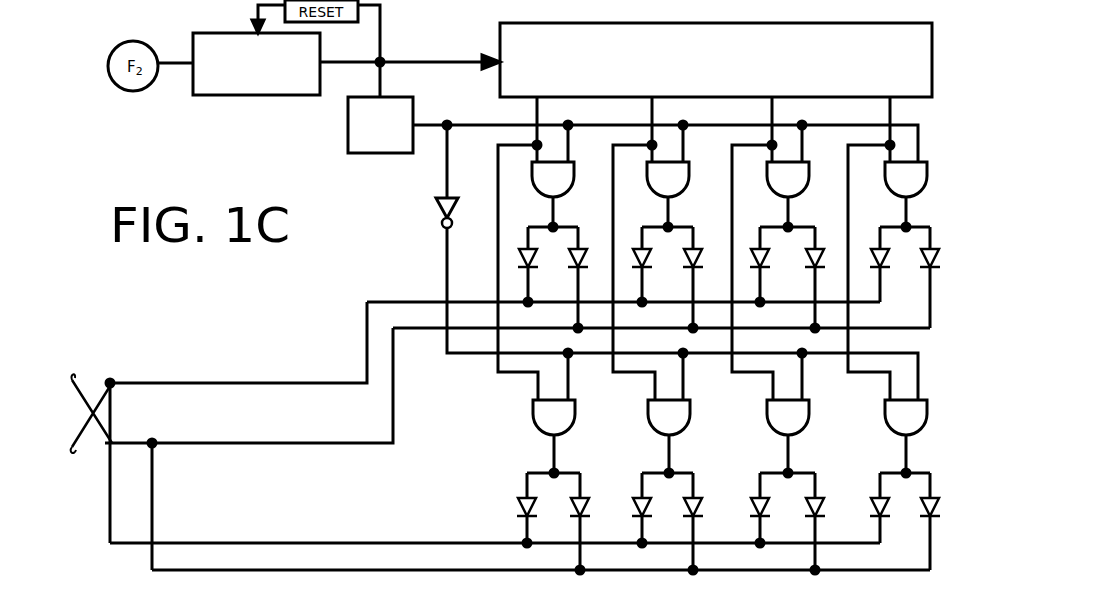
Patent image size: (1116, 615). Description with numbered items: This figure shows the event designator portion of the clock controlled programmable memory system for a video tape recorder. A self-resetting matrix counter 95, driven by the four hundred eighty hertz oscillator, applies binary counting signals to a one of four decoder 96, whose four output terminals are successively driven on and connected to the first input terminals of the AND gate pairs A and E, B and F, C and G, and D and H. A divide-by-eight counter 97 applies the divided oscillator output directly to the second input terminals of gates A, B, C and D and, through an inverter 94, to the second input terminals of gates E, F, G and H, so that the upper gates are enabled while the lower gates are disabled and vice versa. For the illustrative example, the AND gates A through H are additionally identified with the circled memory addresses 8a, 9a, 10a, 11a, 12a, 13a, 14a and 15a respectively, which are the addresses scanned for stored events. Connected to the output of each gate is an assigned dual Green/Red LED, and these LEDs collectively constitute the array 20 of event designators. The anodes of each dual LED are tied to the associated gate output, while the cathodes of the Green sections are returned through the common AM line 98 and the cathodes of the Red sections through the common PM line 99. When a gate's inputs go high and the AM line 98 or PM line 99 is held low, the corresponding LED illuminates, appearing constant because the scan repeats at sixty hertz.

The array of dual LED event designators 20 is at (228, 305).
The inverter 94 is at (436, 206).
The matrix (0-3) counter 95 is at (242, 96).
The (1 of 4) decoder 96 is at (500, 38).
The divide-by-eight counter 97 is at (348, 134).
The AM line 98 is at (327, 382).
The PM line 99 is at (330, 445).
The memory address 8a is at (546, 245).
The memory address 9a is at (661, 245).
The memory address 10a is at (784, 245).
The memory address 11a is at (897, 245).
The memory address 12a is at (544, 485).
The memory address 13a is at (658, 485).
The memory address 14a is at (778, 485).
The memory address 15a is at (893, 485).